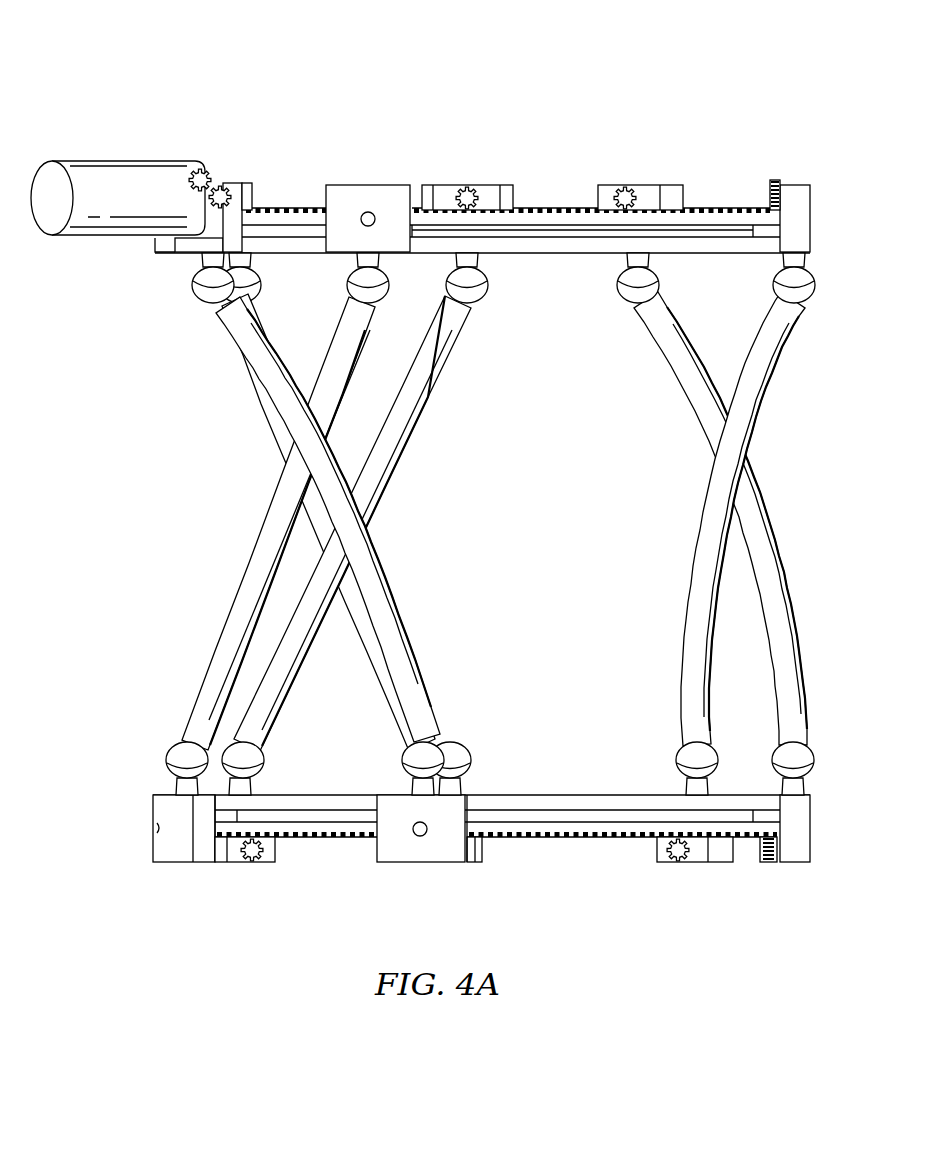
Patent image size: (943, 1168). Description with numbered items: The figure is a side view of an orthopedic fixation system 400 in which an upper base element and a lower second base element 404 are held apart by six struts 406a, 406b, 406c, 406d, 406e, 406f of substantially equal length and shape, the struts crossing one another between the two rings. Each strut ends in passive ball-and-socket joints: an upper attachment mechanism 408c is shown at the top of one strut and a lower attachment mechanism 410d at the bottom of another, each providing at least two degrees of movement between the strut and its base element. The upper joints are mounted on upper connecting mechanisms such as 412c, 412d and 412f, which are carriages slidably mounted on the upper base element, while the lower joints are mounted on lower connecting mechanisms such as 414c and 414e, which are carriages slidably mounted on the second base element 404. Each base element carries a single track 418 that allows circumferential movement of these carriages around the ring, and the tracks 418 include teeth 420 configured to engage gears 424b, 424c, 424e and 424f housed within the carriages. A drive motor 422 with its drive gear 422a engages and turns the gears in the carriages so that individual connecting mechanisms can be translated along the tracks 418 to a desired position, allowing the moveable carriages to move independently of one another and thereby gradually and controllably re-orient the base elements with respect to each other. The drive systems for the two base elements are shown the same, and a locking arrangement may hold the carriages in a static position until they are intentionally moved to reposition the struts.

The orthopedic fixation system 400 is at (345, 65).
The drive motor 422 is at (112, 158).
The drive gear 422a is at (205, 170).
The gear 424c is at (241, 183).
The upper connecting mechanism 412c is at (188, 250).
The upper connecting mechanism 412d is at (368, 185).
The upper connecting mechanism 412f is at (795, 185).
The gear 424b is at (462, 185).
The gear 424e is at (632, 185).
The gear 424f is at (770, 185).
The teeth 420 is at (540, 208).
The track 418 is at (555, 240).
The upper attachment mechanism 408c is at (196, 303).
The strut 406a is at (262, 413).
The strut 406b is at (416, 434).
The strut 406c is at (404, 578).
The strut 406d is at (247, 562).
The strut 406e is at (780, 544).
The strut 406f is at (688, 636).
The lower attachment mechanism 410d is at (165, 766).
The second base element 404 is at (590, 795).
The lower connecting mechanism 414c is at (405, 862).
The lower connecting mechanism 414e is at (805, 862).